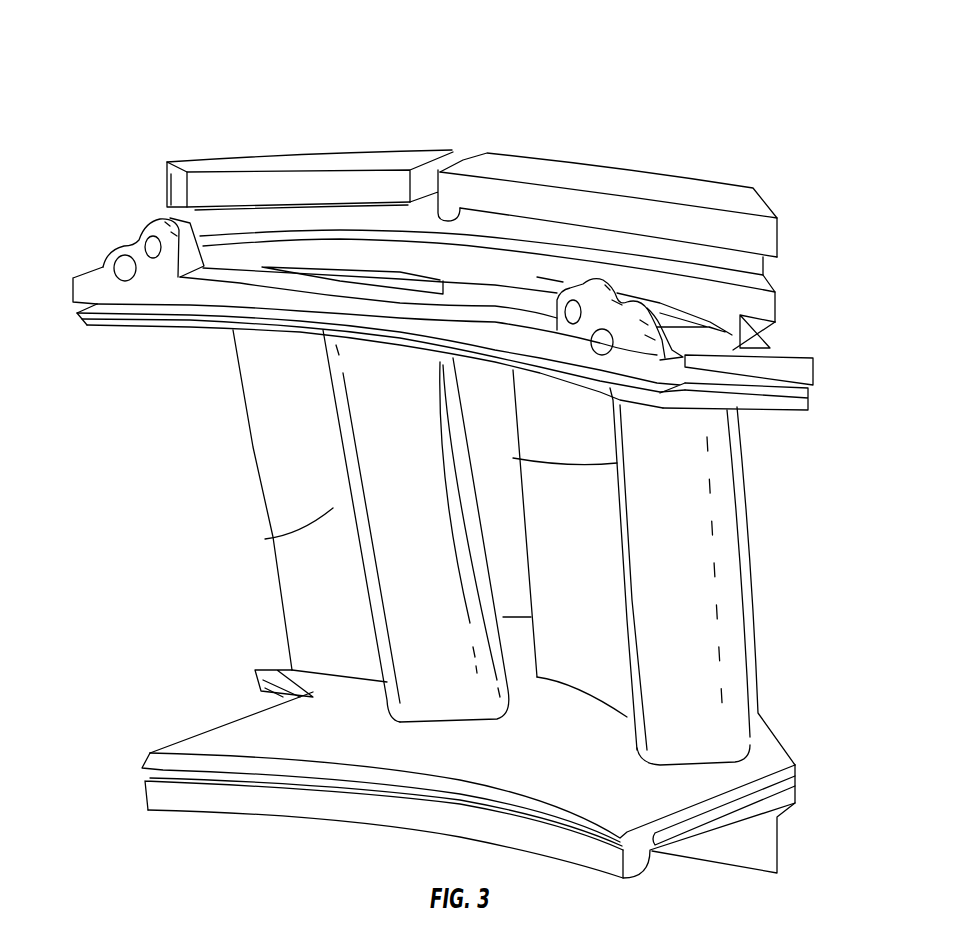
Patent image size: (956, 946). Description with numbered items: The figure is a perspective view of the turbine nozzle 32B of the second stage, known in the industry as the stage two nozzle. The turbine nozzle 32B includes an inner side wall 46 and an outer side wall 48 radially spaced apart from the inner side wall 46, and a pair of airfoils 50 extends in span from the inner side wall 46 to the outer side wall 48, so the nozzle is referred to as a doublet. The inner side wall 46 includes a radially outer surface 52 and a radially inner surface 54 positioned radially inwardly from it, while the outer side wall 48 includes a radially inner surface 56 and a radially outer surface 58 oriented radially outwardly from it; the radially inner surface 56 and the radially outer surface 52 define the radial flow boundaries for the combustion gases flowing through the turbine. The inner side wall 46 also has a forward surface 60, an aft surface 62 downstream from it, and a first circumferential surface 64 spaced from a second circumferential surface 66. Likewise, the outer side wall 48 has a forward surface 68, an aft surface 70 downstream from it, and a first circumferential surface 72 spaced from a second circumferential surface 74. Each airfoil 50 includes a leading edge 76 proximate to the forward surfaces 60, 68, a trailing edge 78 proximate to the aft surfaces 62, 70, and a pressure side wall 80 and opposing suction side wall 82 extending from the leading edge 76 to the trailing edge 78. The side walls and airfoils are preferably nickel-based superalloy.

The turbine nozzle 32B is at (64, 80).
The outer side wall 48 is at (121, 215).
The aft surface 70 is at (414, 152).
The first circumferential surface 72 is at (75, 283).
The radially outer surface 58 is at (742, 345).
The second circumferential surface 74 is at (813, 370).
The radially inner surface 56 is at (157, 331).
The forward surface 68 is at (398, 318).
The airfoil 50 is at (252, 447).
The trailing edge 78 is at (265, 498).
The leading edge 76 is at (362, 547).
The pressure side wall 80 is at (265, 539).
The suction side wall 82 is at (463, 615).
The inner side wall 46 is at (574, 868).
The radially outer surface 52 is at (277, 743).
The first circumferential surface 64 is at (197, 735).
The aft surface 62 is at (276, 664).
The forward surface 60 is at (217, 800).
The second circumferential surface 66 is at (780, 813).
The radially inner surface 54 is at (697, 853).